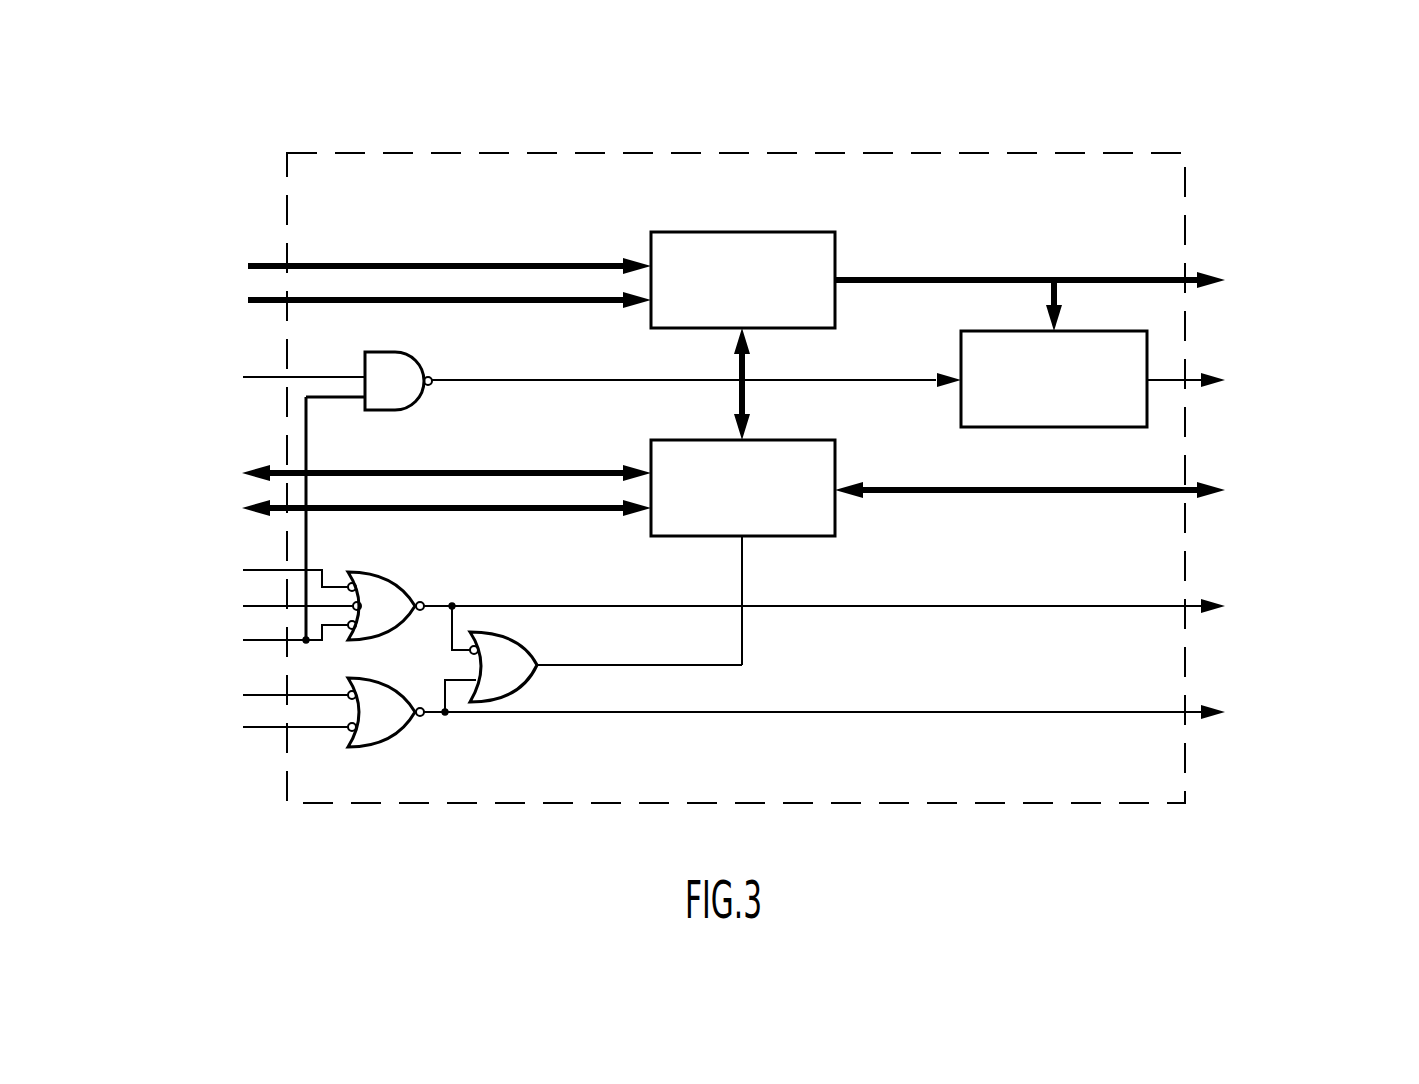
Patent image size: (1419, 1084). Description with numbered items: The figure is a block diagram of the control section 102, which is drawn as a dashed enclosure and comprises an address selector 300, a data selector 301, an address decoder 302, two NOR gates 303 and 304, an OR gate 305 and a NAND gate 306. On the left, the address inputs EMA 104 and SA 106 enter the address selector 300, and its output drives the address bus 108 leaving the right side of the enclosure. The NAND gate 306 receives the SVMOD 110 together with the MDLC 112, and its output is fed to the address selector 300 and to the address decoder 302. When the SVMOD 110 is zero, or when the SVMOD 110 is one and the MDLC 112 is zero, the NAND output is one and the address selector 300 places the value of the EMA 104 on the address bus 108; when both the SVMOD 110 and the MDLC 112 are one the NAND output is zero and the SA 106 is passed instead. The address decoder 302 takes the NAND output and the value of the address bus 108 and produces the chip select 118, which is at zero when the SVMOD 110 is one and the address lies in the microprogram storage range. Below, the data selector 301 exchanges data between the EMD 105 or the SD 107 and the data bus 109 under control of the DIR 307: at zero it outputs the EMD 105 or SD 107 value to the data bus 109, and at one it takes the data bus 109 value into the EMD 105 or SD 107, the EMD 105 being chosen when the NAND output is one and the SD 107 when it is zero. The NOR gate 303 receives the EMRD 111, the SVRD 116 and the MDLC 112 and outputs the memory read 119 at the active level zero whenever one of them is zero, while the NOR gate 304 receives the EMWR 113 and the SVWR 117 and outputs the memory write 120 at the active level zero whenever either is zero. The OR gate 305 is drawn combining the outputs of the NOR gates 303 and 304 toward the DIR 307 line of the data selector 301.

The control section 102 is at (1185, 172).
The address selector 300 is at (752, 232).
The data selector 301 is at (718, 440).
The address decoder 302 is at (961, 362).
The NOR gate 303 is at (370, 640).
The NOR gate 304 is at (370, 745).
The OR gate 305 is at (505, 688).
The NAND gate 306 is at (388, 352).
The DIR 307 is at (742, 580).
The EMA 104 is at (377, 263).
The SA 106 is at (388, 297).
The SVMOD 110 is at (212, 374).
The EMD 105 is at (377, 470).
The SD 107 is at (388, 505).
The EMRD 111 is at (214, 569).
The SVRD 116 is at (217, 603).
The MDLC 112 is at (214, 637).
The EMWR 113 is at (214, 692).
The SVWR 117 is at (214, 724).
The address bus 108 is at (1126, 278).
The chip select 118 is at (1277, 378).
The data bus 109 is at (1106, 488).
The memory read 119 is at (1273, 605).
The memory write 120 is at (893, 716).